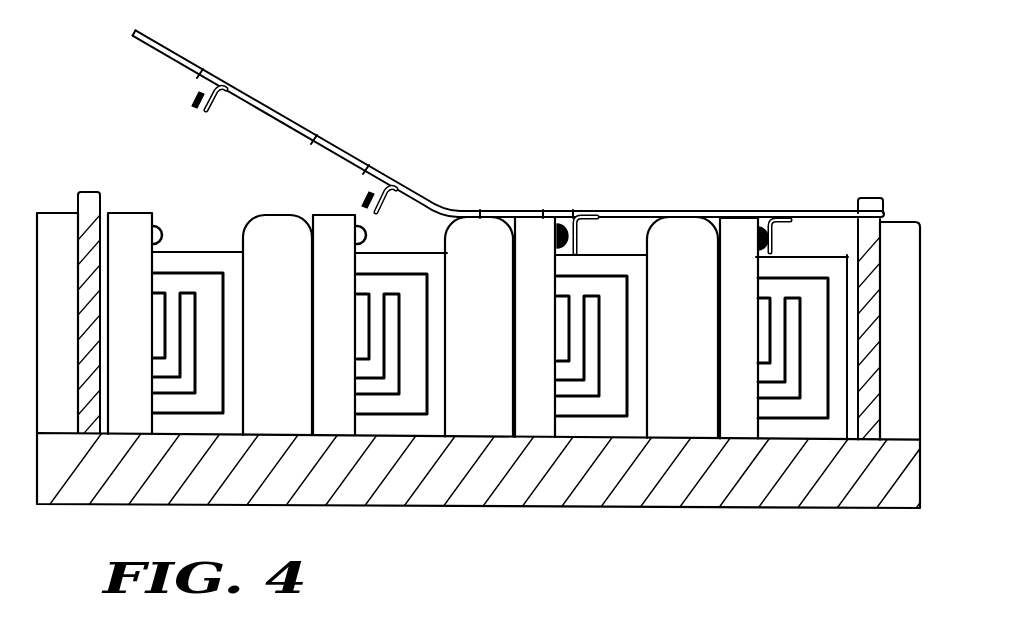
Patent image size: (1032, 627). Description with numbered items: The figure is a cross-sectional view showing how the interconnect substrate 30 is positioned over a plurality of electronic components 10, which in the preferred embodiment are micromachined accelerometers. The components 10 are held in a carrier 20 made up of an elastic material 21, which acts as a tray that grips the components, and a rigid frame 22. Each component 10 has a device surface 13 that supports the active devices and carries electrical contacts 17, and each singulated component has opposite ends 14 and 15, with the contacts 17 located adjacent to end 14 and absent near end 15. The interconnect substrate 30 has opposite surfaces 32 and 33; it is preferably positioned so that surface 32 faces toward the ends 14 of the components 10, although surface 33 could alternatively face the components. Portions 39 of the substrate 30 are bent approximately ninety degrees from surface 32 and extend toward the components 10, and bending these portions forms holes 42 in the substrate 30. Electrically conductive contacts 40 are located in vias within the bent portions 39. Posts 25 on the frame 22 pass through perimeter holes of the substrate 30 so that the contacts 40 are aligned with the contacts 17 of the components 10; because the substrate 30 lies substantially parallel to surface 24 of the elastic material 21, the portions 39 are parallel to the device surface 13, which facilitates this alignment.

The electronic components 10 is at (257, 301).
The device surface 13 is at (357, 289).
The end 14 is at (540, 222).
The end 15 is at (537, 435).
The electrical contacts 17 is at (161, 232).
The carrier 20 is at (548, 537).
The elastic material 21 is at (58, 213).
The rigid frame 22 is at (822, 504).
The surface 24 is at (912, 221).
The posts 25 is at (92, 191).
The interconnect substrate 30 is at (460, 209).
The surface 32 is at (279, 131).
The surface 33 is at (288, 121).
The portions 39 is at (208, 112).
The electrically conductive contacts 40 is at (195, 100).
The holes 42 is at (202, 74).